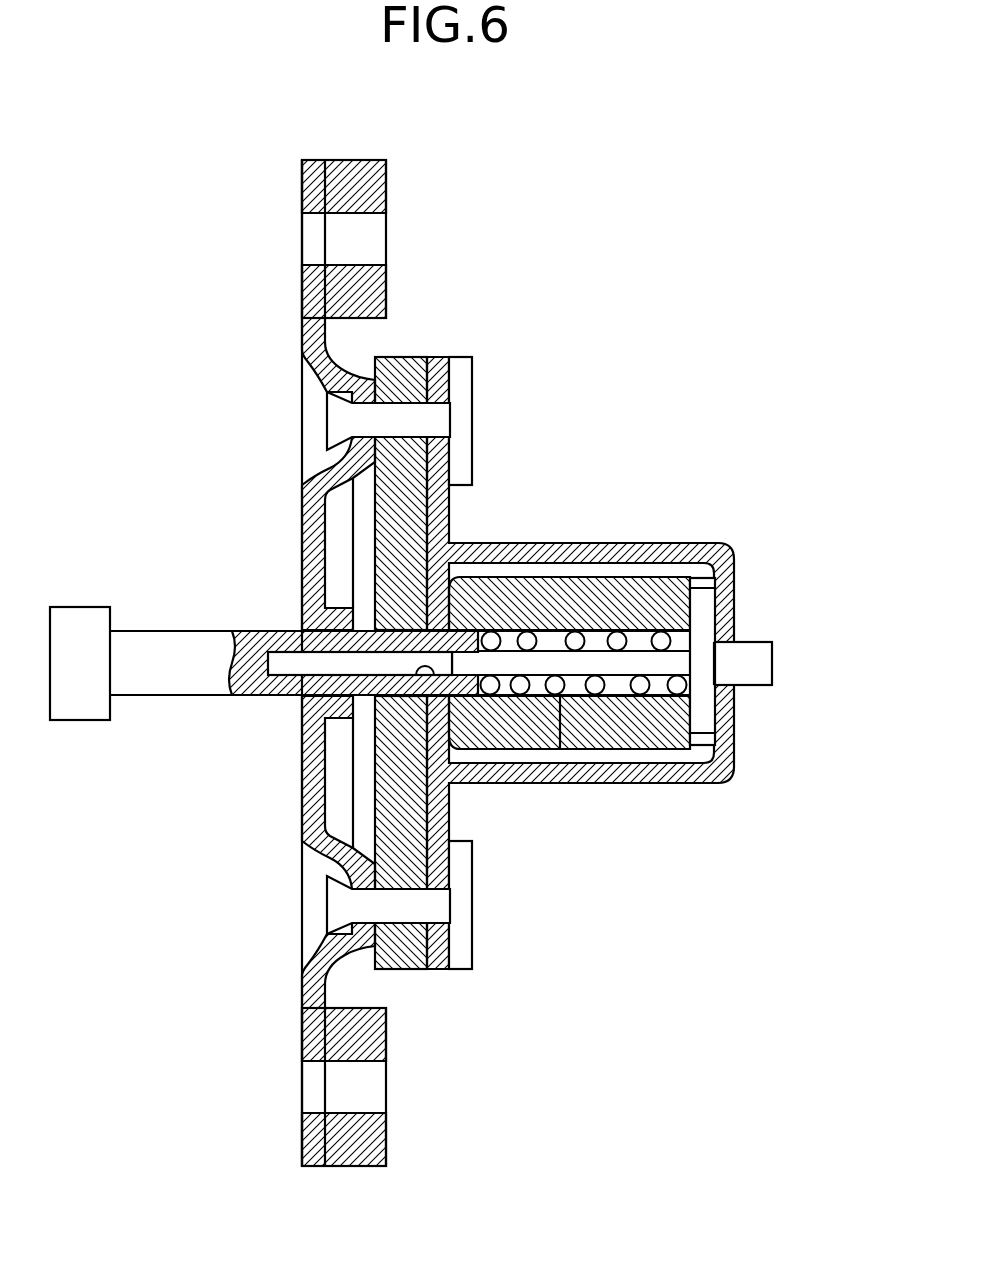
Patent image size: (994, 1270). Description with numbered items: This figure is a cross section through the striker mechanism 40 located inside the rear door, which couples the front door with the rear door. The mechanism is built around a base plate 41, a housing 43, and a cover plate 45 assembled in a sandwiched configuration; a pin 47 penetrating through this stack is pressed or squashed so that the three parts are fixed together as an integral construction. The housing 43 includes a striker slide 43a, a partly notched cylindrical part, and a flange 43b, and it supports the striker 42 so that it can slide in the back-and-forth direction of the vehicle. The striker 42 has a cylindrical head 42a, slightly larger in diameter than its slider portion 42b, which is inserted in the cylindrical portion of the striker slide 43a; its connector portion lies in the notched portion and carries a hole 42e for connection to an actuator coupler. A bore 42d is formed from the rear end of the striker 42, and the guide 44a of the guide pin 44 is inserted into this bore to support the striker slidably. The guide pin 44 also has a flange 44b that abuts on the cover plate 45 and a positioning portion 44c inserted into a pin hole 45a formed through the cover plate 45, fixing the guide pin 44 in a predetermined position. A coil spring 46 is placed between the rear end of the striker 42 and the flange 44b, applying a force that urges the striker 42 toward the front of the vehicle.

The striker mechanism 40 is at (524, 186).
The base plate 41 is at (302, 305).
The striker 42 is at (357, 668).
The head 42a is at (88, 712).
The slider portion 42b is at (168, 645).
The bore 42d is at (430, 676).
The hole 42e is at (285, 696).
The housing 43 is at (560, 728).
The striker slide 43a is at (628, 700).
The flange 43b is at (415, 510).
The guide pin 44 is at (672, 616).
The guide 44a is at (640, 660).
The flange 44b is at (702, 614).
The positioning portion 44c is at (762, 665).
The cover plate 45 is at (668, 548).
The pin hole 45a is at (730, 685).
The coil spring 46 is at (592, 696).
The pin 47 is at (410, 410).